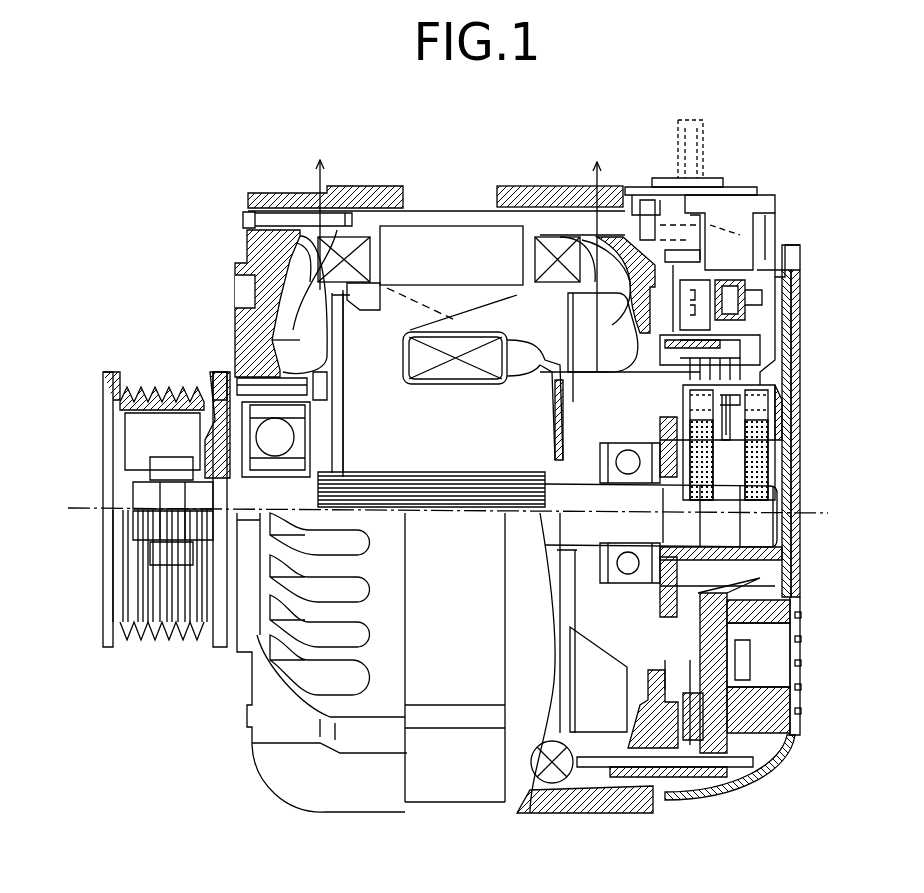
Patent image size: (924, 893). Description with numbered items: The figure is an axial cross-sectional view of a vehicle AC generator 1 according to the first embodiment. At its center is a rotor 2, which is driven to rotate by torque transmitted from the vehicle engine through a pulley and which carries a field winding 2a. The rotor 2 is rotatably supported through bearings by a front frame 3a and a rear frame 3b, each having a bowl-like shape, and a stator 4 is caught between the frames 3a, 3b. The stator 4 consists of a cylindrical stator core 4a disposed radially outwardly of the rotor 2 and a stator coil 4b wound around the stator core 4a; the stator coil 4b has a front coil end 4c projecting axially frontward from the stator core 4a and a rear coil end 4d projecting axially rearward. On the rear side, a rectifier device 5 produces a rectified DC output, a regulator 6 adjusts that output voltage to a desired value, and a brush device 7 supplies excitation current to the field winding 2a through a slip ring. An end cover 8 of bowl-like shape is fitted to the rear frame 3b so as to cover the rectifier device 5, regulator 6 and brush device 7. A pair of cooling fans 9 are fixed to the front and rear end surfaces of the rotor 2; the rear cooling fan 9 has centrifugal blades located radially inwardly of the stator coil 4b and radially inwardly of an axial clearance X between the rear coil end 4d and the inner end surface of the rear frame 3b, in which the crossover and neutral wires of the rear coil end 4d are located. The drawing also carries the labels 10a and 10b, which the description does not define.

The vehicle AC generator 1 is at (277, 808).
The rotor 2 is at (390, 322).
The field winding 2a is at (443, 373).
The front frame 3a is at (248, 240).
The rear frame 3b is at (543, 243).
The stator 4 is at (470, 446).
The stator core 4a is at (463, 243).
The stator coil 4b is at (582, 237).
The front coil end 4c is at (340, 243).
The rear coil end 4d is at (523, 193).
The rectifier device 5 is at (792, 692).
The regulator 6 is at (795, 210).
The brush device 7 is at (782, 407).
The end cover 8 is at (770, 768).
The cooling fan 9 is at (307, 312).
The rear air discharge opening 10a is at (700, 378).
The front air discharge opening 10b is at (287, 330).
The axial clearance X is at (608, 273).